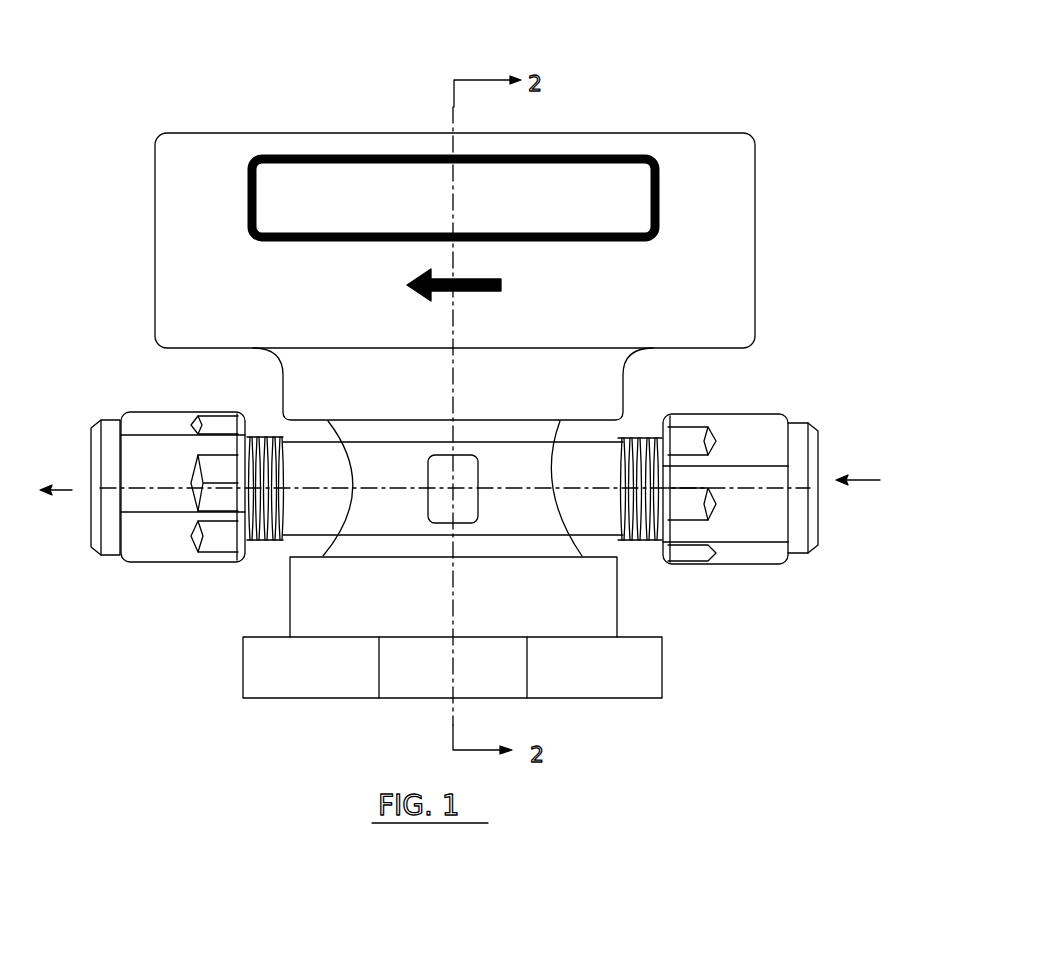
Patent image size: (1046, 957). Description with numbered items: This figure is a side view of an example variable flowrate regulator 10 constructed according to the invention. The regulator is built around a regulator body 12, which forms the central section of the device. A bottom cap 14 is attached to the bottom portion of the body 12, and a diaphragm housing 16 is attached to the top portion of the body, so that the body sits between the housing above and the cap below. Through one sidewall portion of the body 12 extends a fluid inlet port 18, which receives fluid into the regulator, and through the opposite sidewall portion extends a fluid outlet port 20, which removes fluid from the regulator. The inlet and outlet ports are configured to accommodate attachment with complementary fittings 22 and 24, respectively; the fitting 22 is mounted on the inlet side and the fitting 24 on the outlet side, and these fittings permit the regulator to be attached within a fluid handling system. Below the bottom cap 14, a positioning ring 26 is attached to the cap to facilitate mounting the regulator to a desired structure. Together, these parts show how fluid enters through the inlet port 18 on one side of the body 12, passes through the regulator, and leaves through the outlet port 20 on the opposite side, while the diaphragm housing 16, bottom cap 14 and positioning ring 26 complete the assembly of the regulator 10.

The variable flowrate regulator 10 is at (604, 108).
The regulator body 12 is at (508, 452).
The bottom cap 14 is at (605, 608).
The diaphragm housing 16 is at (738, 272).
The fluid inlet port 18 is at (610, 450).
The fluid outlet port 20 is at (293, 522).
The fitting 22 is at (760, 428).
The fitting 24 is at (163, 550).
The positioning ring 26 is at (618, 683).